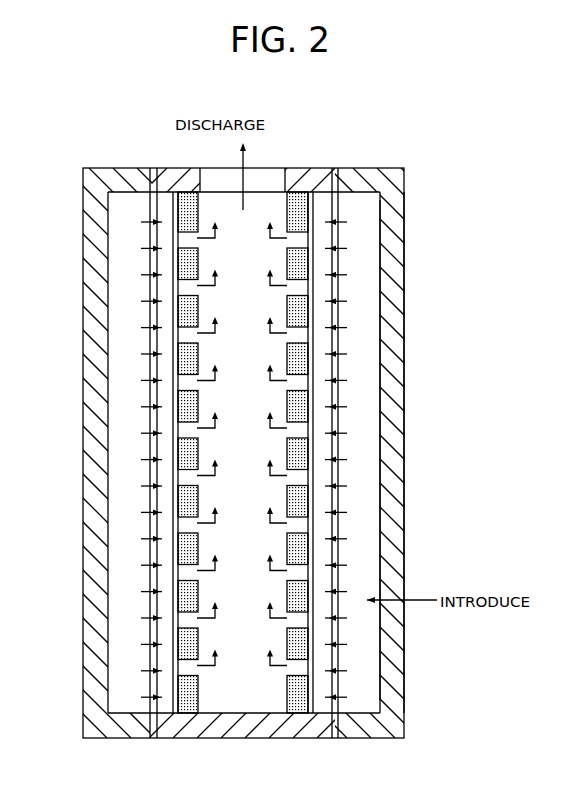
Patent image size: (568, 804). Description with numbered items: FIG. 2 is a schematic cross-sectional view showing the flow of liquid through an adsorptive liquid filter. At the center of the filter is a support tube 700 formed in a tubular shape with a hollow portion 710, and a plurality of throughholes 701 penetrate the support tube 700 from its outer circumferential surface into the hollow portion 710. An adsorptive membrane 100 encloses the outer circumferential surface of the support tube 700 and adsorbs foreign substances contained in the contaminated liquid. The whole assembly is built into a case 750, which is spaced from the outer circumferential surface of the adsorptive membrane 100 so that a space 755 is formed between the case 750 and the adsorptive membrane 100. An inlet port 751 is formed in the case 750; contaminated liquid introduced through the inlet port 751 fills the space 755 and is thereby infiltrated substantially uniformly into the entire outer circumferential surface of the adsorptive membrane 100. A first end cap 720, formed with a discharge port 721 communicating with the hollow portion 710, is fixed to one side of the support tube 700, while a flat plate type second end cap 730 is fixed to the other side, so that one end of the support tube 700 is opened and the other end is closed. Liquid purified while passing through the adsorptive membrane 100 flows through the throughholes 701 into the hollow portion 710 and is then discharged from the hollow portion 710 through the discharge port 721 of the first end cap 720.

The adsorptive membrane 100 is at (338, 232).
The support tube 700 is at (300, 197).
The throughholes 701 is at (178, 240).
The hollow portion 710 is at (225, 697).
The first end cap 720 is at (177, 175).
The discharge port 721 is at (285, 190).
The second end cap 730 is at (280, 723).
The case 750 is at (402, 193).
The inlet port 751 is at (393, 568).
The space 755 is at (367, 285).